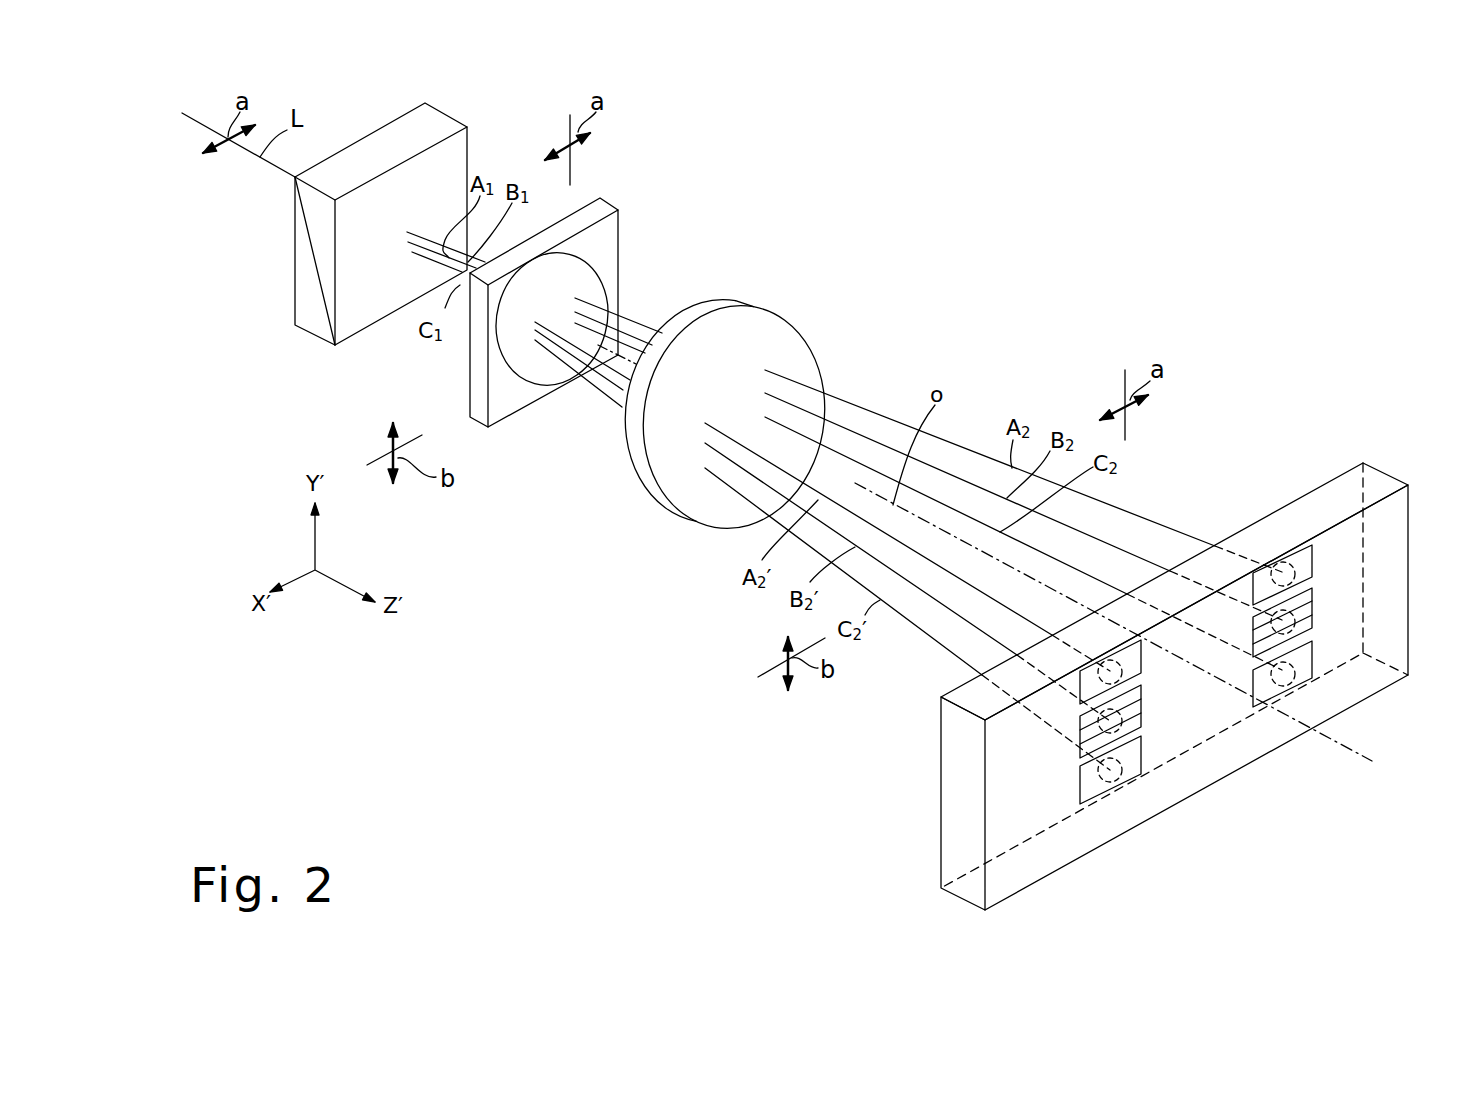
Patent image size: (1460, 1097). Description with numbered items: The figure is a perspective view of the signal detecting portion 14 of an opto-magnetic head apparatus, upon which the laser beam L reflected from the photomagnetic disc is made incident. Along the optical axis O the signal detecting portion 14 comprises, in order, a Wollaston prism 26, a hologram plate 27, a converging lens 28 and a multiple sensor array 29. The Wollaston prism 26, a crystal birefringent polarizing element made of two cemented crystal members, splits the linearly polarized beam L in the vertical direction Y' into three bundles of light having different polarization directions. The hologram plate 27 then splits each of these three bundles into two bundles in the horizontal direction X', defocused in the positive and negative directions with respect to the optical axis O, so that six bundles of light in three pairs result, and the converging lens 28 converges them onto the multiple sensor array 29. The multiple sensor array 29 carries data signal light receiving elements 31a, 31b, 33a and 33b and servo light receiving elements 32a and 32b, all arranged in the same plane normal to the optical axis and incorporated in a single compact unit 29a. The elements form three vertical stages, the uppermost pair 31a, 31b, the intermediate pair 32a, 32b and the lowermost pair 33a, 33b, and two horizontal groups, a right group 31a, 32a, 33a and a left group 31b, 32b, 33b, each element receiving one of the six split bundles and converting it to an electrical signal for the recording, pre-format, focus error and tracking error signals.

The signal detecting portion 14 is at (907, 243).
The Wollaston prism 26 is at (443, 120).
The hologram plate 27 is at (587, 277).
The converging lens 28 is at (805, 340).
The multiple sensor array 29 is at (1278, 497).
The single compact unit 29a is at (1336, 491).
The data signal light receiving element 31a is at (1315, 558).
The servo light receiving element 32a is at (1317, 600).
The data signal light receiving element 33a is at (1317, 650).
The data signal light receiving element 31b is at (1086, 688).
The servo light receiving element 32b is at (1071, 739).
The data signal light receiving element 33b is at (1073, 794).